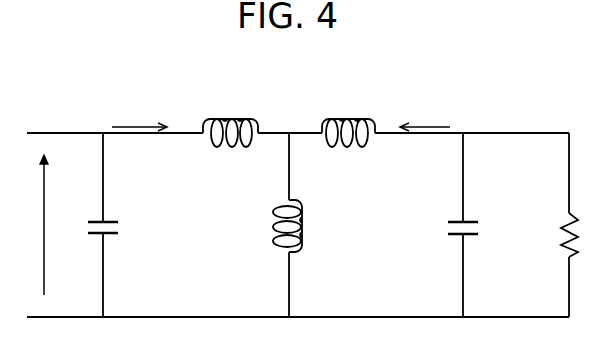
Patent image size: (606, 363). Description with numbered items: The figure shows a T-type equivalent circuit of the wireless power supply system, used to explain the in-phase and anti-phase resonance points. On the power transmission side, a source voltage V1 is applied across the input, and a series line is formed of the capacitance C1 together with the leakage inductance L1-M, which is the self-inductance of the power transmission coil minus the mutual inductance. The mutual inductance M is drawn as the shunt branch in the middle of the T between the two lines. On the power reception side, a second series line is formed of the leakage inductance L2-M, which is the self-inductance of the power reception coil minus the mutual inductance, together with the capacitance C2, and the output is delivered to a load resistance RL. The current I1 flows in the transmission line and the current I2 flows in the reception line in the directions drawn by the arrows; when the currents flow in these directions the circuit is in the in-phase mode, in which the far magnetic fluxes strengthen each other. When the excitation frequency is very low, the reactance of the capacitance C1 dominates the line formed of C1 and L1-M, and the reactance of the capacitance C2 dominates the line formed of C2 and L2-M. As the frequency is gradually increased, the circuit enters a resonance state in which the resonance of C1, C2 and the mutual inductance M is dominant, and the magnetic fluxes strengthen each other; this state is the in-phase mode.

The input voltage V1 is at (30, 225).
The current I1 is at (139, 114).
The current I2 is at (425, 115).
The capacitance C1 is at (112, 225).
The capacitance C2 is at (473, 225).
The leakage inductance L1-M is at (230, 118).
The leakage inductance L2-M is at (348, 118).
The mutual inductance M is at (302, 225).
The load resistance RL is at (554, 235).